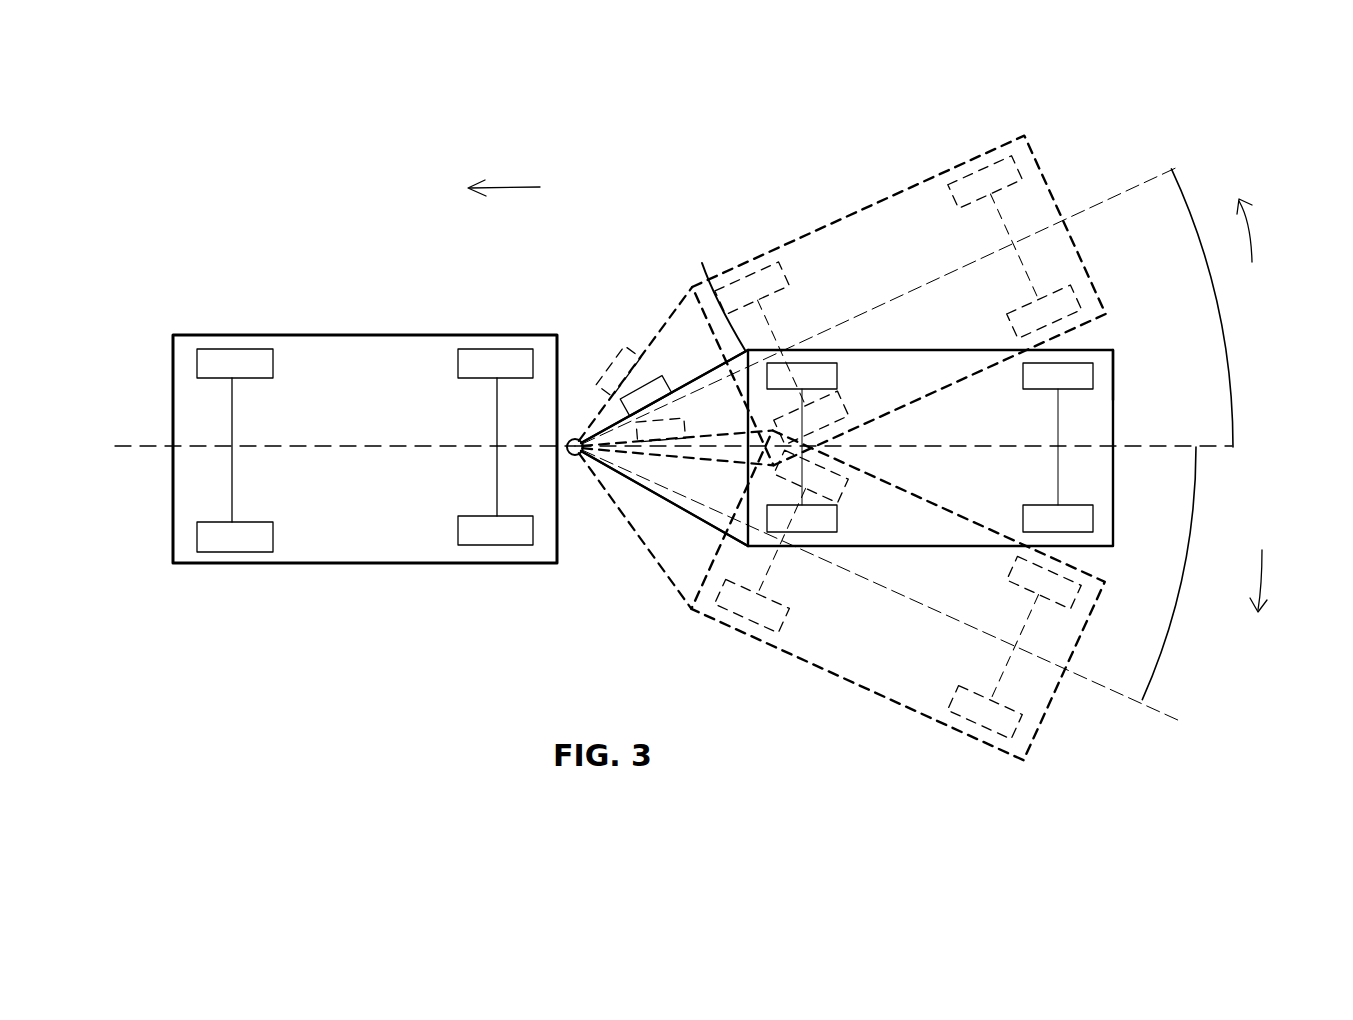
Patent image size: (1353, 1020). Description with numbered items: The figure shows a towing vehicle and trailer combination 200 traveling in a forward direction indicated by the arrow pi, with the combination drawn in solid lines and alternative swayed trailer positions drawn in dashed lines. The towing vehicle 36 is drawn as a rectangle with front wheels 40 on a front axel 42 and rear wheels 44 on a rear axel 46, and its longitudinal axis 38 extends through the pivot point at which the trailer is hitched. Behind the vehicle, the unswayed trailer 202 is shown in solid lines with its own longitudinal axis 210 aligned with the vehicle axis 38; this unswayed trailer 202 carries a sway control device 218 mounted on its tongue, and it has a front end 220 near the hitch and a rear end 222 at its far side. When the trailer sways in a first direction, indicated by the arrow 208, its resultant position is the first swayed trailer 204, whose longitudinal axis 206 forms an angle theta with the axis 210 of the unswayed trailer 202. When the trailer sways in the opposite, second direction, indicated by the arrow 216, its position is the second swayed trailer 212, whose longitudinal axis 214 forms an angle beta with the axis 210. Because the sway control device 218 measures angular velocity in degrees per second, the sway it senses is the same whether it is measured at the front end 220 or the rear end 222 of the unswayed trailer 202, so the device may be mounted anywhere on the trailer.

The towing vehicle 36 is at (346, 330).
The longitudinal axis 38 is at (134, 446).
The front wheels 40 is at (232, 349).
The front axel 42 is at (230, 407).
The rear wheels 44 is at (497, 349).
The rear axel 46 is at (495, 413).
The towing vehicle and trailer combination 200 is at (619, 132).
The unswayed trailer 202 is at (1115, 397).
The first swayed trailer 204 is at (1046, 179).
The longitudinal axis 206 is at (1143, 188).
The arrow 208 is at (1257, 237).
The longitudinal axis 210 is at (1155, 447).
The second swayed trailer 212 is at (1088, 620).
The longitudinal axis 214 is at (1120, 695).
The arrow 216 is at (1234, 573).
The sway control device 218 is at (668, 374).
The front end 220 is at (710, 292).
The rear end 222 is at (1113, 350).